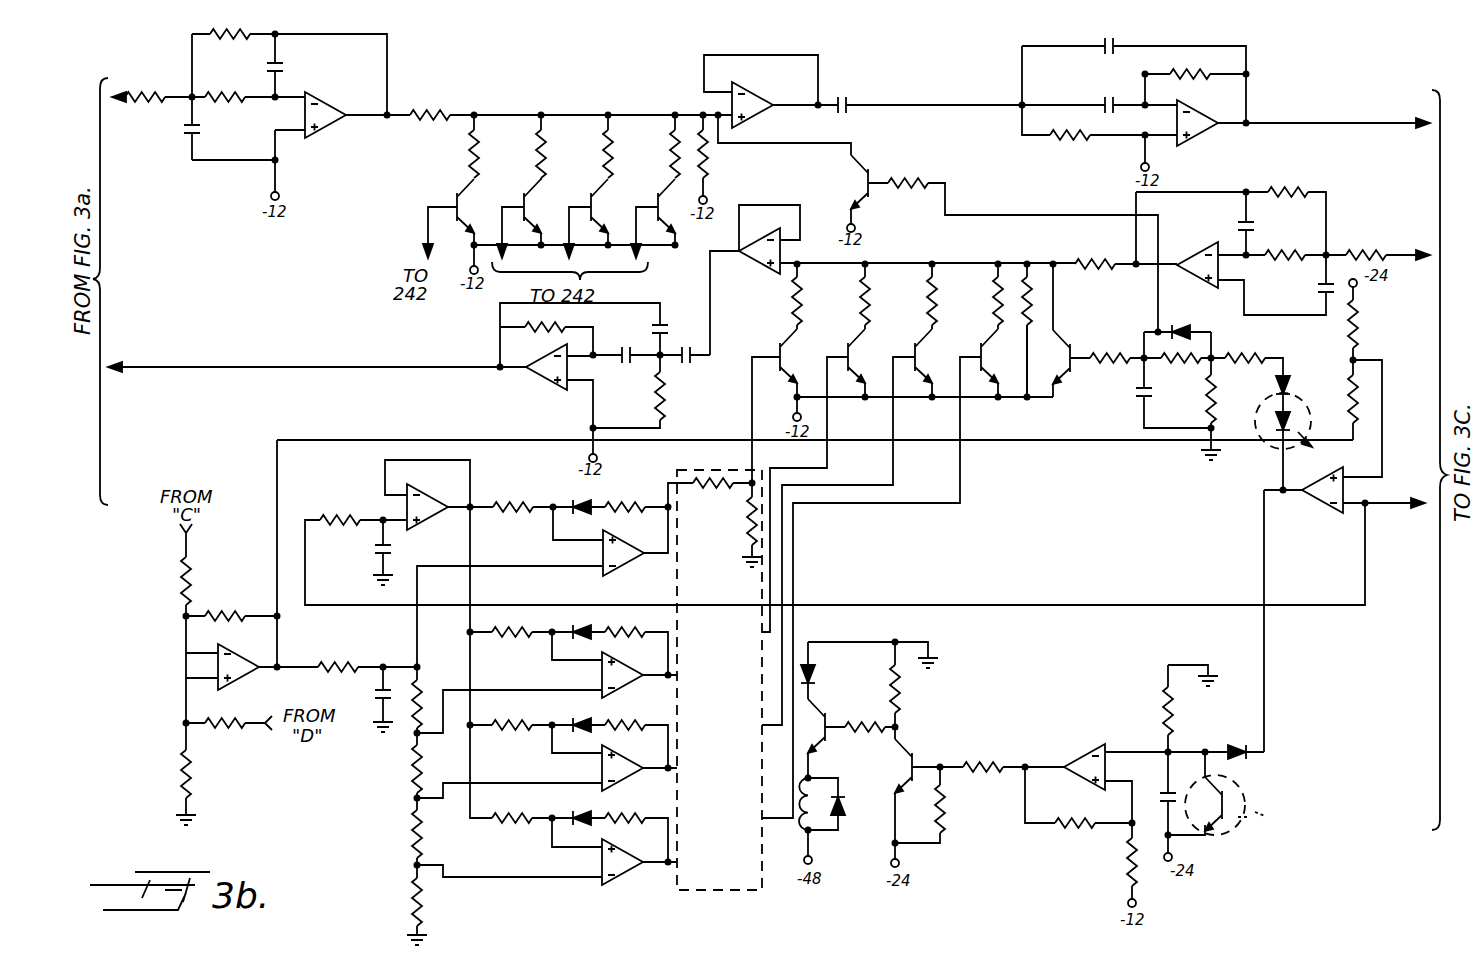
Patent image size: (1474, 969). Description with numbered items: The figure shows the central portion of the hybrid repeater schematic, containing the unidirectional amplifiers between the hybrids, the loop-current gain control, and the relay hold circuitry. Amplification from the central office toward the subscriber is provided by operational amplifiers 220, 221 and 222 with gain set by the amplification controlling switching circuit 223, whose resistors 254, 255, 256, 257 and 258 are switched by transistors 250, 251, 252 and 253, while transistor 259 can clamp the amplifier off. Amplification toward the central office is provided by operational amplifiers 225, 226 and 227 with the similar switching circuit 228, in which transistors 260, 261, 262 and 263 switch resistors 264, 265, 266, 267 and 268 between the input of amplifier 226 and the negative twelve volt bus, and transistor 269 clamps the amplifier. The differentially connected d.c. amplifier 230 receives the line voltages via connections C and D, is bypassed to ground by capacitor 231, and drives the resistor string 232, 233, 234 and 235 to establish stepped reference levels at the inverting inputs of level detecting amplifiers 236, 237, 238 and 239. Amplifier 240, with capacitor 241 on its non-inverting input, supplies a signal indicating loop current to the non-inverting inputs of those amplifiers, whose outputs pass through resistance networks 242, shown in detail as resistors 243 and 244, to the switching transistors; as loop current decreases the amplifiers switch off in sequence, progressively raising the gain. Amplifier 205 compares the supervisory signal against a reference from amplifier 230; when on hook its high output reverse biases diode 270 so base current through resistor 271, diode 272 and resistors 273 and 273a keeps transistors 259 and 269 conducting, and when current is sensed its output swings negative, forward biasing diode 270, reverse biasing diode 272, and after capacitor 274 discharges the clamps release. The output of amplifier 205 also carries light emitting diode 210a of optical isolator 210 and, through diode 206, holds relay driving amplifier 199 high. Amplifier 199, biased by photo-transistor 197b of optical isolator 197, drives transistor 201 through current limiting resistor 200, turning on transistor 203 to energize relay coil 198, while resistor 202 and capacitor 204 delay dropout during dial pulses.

The operational amplifier 220 is at (338, 84).
The operational amplifier 221 is at (752, 88).
The operational amplifier 222 is at (1203, 135).
The amplification controlling switching circuit 223 is at (570, 158).
The operational amplifier 225 is at (1192, 256).
The operational amplifier 226 is at (750, 268).
The operational amplifier 227 is at (548, 388).
The amplification switching circuit 228 is at (930, 288).
The differentially connected d.c. amplifier 230 is at (228, 688).
The capacitor 231 is at (375, 690).
The resistor 232 is at (422, 690).
The resistor 233 is at (410, 772).
The resistor 234 is at (410, 840).
The resistor 235 is at (410, 903).
The level detecting amplifier 236 is at (614, 572).
The level detecting amplifier 237 is at (612, 692).
The level detecting amplifier 238 is at (613, 786).
The level detecting amplifier 239 is at (610, 880).
The amplifier 240 is at (437, 487).
The capacitor 241 is at (396, 550).
The resistance networks 242 is at (680, 472).
The resistor 243 is at (708, 490).
The resistor 244 is at (748, 535).
The switching transistor 250 is at (452, 200).
The switching transistor 251 is at (519, 203).
The switching transistor 252 is at (586, 203).
The switching transistor 253 is at (653, 203).
The resistor 254 is at (480, 130).
The resistor 255 is at (548, 130).
The resistor 256 is at (614, 130).
The resistor 257 is at (680, 130).
The resistor 258 is at (710, 152).
The transistor 259 is at (870, 172).
The switching transistor 260 is at (776, 350).
The switching transistor 261 is at (845, 350).
The switching transistor 262 is at (912, 350).
The switching transistor 263 is at (978, 350).
The resistor 264 is at (792, 320).
The resistor 265 is at (860, 302).
The resistor 266 is at (930, 295).
The resistor 267 is at (996, 296).
The resistor 268 is at (1027, 290).
The transistor 269 is at (1060, 385).
The diode 270 is at (1292, 380).
The resistor 271 is at (1216, 401).
The diode 272 is at (1183, 330).
The resistor 273 is at (1105, 353).
The resistor 273a is at (910, 195).
The capacitor 274 is at (1138, 405).
The optical isolator 210 is at (1306, 425).
The light emitting diode 210a is at (1278, 435).
The amplifier 205 is at (1325, 508).
The diode 206 is at (1237, 745).
The capacitor 204 is at (1160, 792).
The resistor 202 is at (1160, 707).
The transistor 203 is at (850, 703).
The transistor 201 is at (915, 757).
The current limiting resistor 200 is at (983, 760).
The relay driving amplifier 199 is at (1086, 748).
The relay coil 198 is at (812, 790).
The optical isolator 197 is at (1232, 830).
The photo-transistor 197b is at (1225, 800).